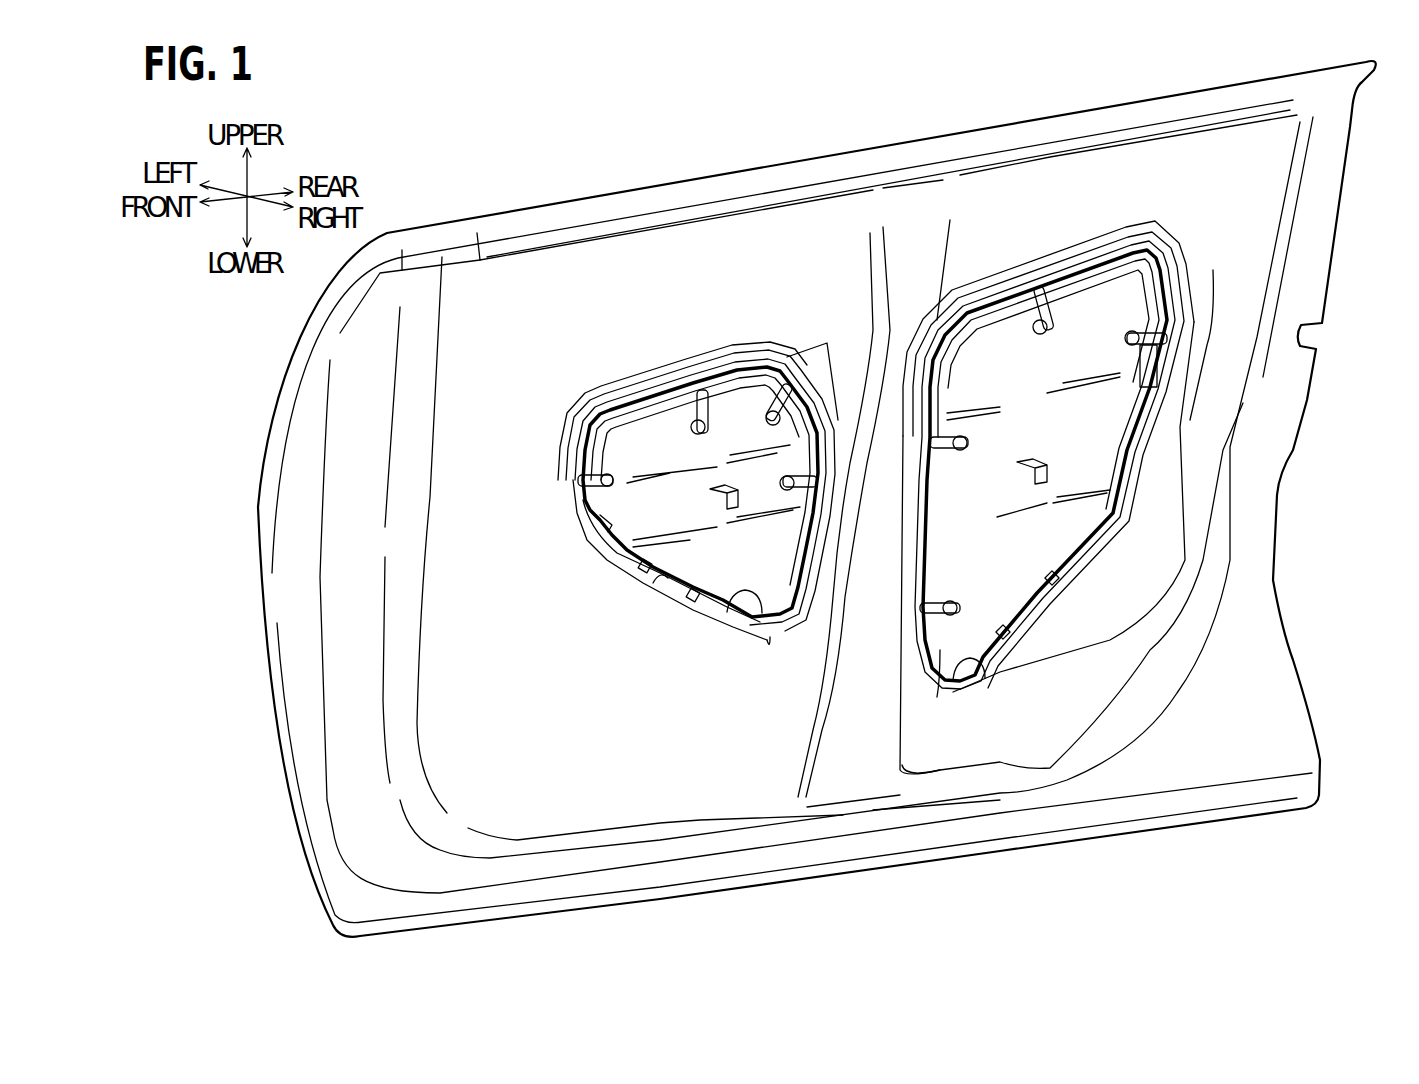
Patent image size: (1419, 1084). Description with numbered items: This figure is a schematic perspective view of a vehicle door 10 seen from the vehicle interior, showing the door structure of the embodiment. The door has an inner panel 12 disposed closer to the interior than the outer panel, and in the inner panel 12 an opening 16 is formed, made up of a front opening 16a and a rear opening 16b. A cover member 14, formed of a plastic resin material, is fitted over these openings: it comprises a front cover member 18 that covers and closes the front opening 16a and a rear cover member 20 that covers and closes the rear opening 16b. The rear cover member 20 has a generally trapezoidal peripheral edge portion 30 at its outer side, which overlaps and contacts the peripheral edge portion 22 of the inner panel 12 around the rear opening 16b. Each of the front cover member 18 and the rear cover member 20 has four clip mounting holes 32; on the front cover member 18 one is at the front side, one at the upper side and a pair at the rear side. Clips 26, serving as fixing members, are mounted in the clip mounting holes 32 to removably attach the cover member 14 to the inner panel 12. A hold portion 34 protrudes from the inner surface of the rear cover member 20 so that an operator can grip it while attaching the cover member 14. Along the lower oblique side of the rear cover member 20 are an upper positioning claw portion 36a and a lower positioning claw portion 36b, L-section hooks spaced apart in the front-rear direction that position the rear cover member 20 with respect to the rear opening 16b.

The vehicle door 10 is at (479, 166).
The inner panel 12 is at (649, 175).
The cover member 14 is at (760, 132).
The opening 16 is at (967, 897).
The front opening 16a is at (770, 640).
The rear opening 16b is at (940, 650).
The front cover member 18 is at (759, 348).
The rear cover member 20 is at (1014, 280).
The peripheral edge portion 22 is at (657, 580).
The clip 26 is at (707, 377).
The peripheral edge portion 30 is at (610, 560).
The clip mounting hole 32 is at (607, 474).
The hold portion 34 is at (708, 499).
The positioning claw portion 36a is at (640, 577).
The positioning claw portion 36b is at (693, 603).